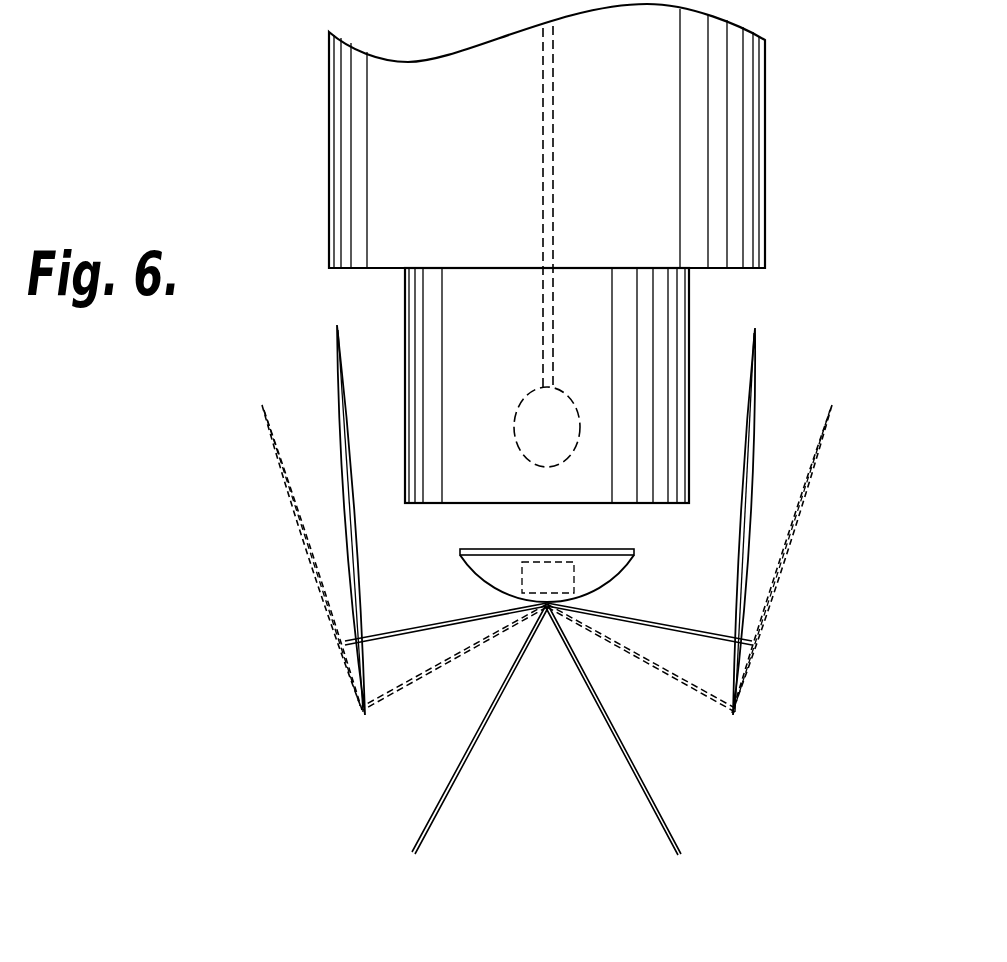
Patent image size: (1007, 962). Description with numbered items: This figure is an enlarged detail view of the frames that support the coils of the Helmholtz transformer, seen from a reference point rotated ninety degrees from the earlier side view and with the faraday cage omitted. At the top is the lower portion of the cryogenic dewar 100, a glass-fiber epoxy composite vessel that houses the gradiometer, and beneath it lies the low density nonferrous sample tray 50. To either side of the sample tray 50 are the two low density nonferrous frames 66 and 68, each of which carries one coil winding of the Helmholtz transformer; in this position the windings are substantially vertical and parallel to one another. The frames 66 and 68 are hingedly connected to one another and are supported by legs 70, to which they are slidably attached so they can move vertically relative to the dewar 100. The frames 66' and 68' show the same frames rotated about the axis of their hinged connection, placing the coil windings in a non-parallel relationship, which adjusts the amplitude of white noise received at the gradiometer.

The cryogenic dewar 100 is at (772, 158).
The sample tray 50 is at (633, 556).
The frame 66 is at (442, 520).
The frame in rotated position 66' is at (404, 573).
The frame 68 is at (651, 521).
The frame in rotated position 68' is at (689, 590).
The legs 70 is at (452, 801).